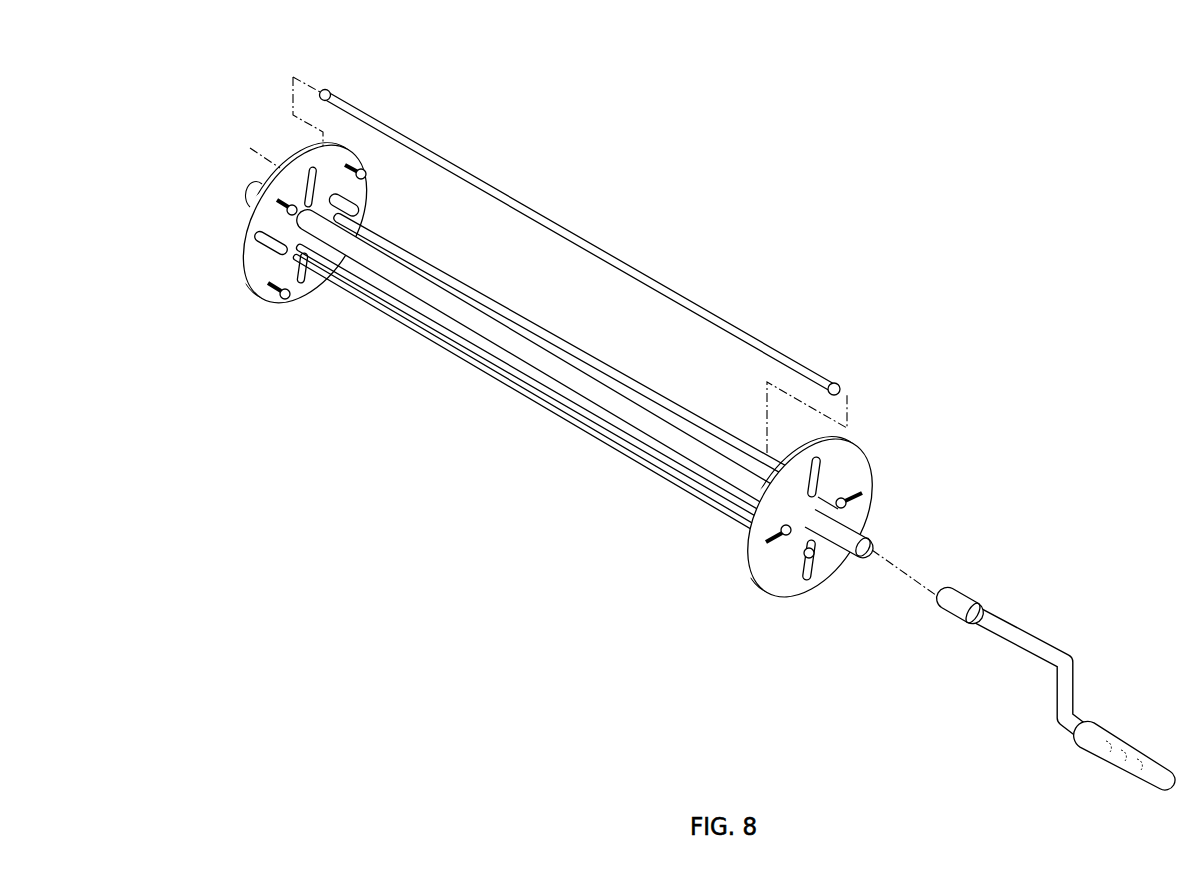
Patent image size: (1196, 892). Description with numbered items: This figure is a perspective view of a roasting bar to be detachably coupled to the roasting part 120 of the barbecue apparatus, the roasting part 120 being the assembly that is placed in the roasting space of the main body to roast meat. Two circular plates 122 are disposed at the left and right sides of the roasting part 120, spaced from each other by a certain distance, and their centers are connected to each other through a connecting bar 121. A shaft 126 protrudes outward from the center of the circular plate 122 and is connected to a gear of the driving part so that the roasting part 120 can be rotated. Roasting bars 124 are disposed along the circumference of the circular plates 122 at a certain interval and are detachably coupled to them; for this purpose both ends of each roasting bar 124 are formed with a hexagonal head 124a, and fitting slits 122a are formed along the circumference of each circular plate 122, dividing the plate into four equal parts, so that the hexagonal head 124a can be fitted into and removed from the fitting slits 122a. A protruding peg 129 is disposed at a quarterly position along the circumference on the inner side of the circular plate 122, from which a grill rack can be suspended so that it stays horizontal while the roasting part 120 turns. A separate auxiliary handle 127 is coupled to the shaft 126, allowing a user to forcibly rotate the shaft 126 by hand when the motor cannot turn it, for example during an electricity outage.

The roasting part 120 is at (654, 215).
The connecting bar 121 is at (493, 337).
The circular plate 122 is at (250, 236).
The fitting slit 122a is at (266, 260).
The roasting bar 124 is at (495, 185).
The hexagonal head 124a is at (840, 386).
The shaft 126 is at (852, 524).
The auxiliary handle 127 is at (1017, 631).
The protruding peg 129 is at (292, 304).